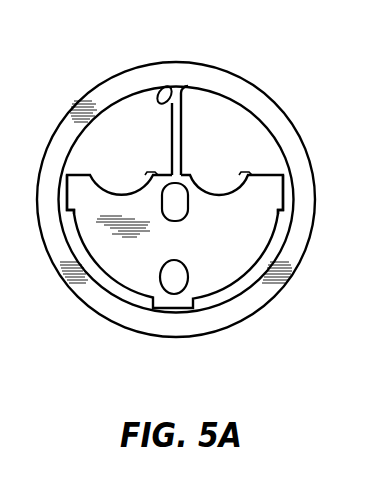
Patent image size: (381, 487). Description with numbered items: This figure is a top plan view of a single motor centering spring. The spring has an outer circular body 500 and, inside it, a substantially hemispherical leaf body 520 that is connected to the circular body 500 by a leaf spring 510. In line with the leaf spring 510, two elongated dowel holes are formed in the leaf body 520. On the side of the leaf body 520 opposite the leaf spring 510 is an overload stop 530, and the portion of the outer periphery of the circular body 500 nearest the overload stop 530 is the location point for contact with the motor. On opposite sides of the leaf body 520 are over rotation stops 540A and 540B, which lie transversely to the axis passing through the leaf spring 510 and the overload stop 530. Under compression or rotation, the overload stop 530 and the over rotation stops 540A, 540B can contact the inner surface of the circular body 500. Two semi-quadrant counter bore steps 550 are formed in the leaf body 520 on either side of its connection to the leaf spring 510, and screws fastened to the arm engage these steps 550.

The outer circular body 500 is at (213, 72).
The leaf spring 510 is at (158, 88).
The leaf body 520 is at (142, 268).
The overload stop 530 is at (180, 293).
The over rotation stop 540A is at (100, 205).
The over rotation stop 540B is at (273, 190).
The semi-quadrant counter bore step 550 is at (112, 185).